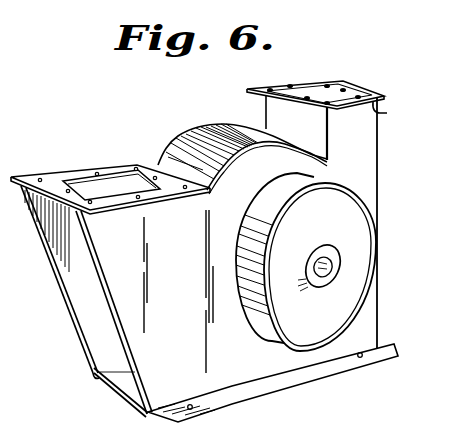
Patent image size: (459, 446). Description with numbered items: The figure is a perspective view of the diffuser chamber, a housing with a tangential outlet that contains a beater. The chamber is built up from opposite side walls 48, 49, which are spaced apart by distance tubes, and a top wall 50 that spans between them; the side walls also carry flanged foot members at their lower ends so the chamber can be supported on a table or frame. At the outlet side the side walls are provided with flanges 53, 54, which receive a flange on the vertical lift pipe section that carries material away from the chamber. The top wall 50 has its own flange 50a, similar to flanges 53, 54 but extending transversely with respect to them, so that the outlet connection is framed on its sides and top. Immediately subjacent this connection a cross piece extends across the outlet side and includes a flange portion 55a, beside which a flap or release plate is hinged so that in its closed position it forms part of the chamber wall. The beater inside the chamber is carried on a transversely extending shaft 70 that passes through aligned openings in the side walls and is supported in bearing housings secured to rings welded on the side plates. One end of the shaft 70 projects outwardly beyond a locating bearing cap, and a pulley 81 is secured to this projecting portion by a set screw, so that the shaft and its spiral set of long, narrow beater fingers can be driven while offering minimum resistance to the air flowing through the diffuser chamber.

The side wall 48 is at (62, 273).
The side wall 49 is at (180, 357).
The top wall 50 is at (203, 131).
The flange 50a is at (281, 98).
The flange 53 is at (286, 84).
The flange portion 55a is at (348, 86).
The flange 54 is at (389, 114).
The shaft 70 is at (324, 268).
The pulley 81 is at (379, 243).